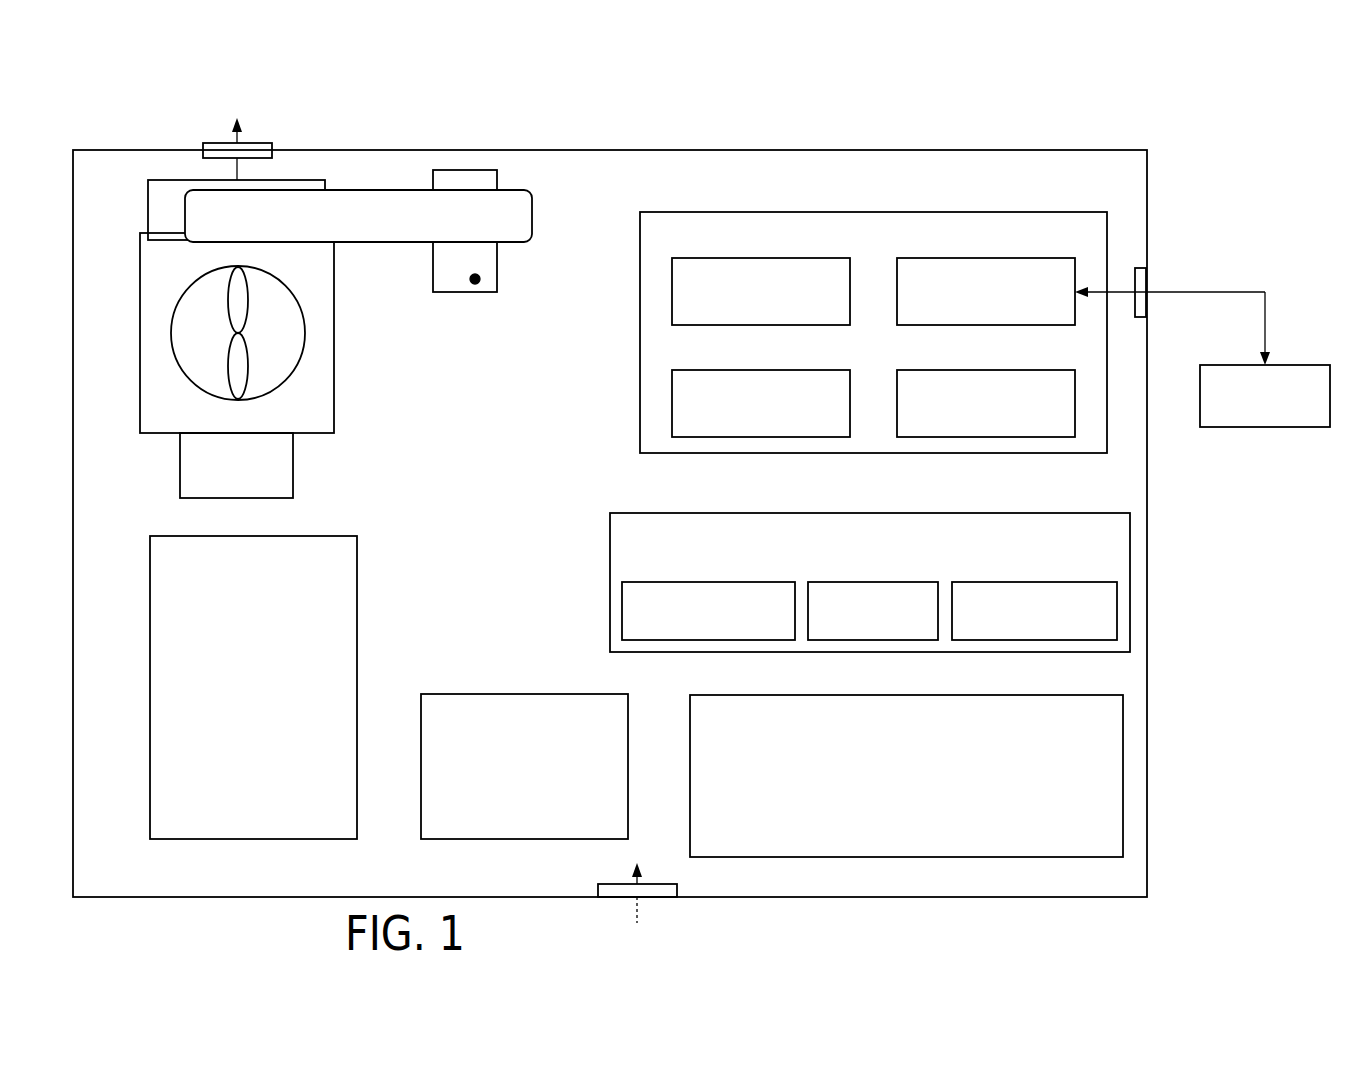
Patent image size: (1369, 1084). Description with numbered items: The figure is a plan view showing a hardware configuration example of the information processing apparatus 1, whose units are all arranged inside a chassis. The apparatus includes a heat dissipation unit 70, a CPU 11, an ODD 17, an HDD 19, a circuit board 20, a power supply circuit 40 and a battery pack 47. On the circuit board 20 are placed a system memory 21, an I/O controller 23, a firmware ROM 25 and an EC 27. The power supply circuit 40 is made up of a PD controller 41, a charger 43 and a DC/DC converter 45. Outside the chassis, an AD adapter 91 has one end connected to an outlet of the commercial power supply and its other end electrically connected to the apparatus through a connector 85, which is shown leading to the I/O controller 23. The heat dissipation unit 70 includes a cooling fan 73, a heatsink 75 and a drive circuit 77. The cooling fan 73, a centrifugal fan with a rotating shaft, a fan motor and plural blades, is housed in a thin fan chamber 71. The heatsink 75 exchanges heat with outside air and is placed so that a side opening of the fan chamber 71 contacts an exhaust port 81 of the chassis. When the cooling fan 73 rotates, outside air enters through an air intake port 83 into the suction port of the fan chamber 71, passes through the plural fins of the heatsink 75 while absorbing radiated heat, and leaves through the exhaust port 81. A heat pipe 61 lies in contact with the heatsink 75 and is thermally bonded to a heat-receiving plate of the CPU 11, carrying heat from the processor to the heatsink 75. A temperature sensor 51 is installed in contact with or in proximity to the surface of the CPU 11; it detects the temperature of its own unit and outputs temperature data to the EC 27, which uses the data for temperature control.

The information processing apparatus 1 is at (121, 126).
The CPU 11 is at (473, 170).
The ODD 17 is at (360, 562).
The HDD 19 is at (448, 694).
The circuit board 20 is at (873, 313).
The system memory 21 is at (782, 258).
The I/O controller 23 is at (1002, 258).
The firmware ROM 25 is at (782, 370).
The EC 27 is at (1002, 370).
The power supply circuit 40 is at (870, 558).
The PD controller 41 is at (745, 582).
The charger 43 is at (870, 582).
The DC/DC converter 45 is at (1028, 582).
The battery pack 47 is at (790, 695).
The temperature sensor 51 is at (475, 285).
The heat pipe 61 is at (393, 190).
The heat dissipation unit 70 is at (250, 326).
The fan chamber 71 is at (337, 403).
The cooling fan 73 is at (247, 300).
The heatsink 75 is at (307, 180).
The drive circuit 77 is at (178, 460).
The exhaust port 81 is at (257, 141).
The air intake port 83 is at (657, 897).
The connector 85 is at (1148, 283).
The AD adapter 91 is at (1293, 365).